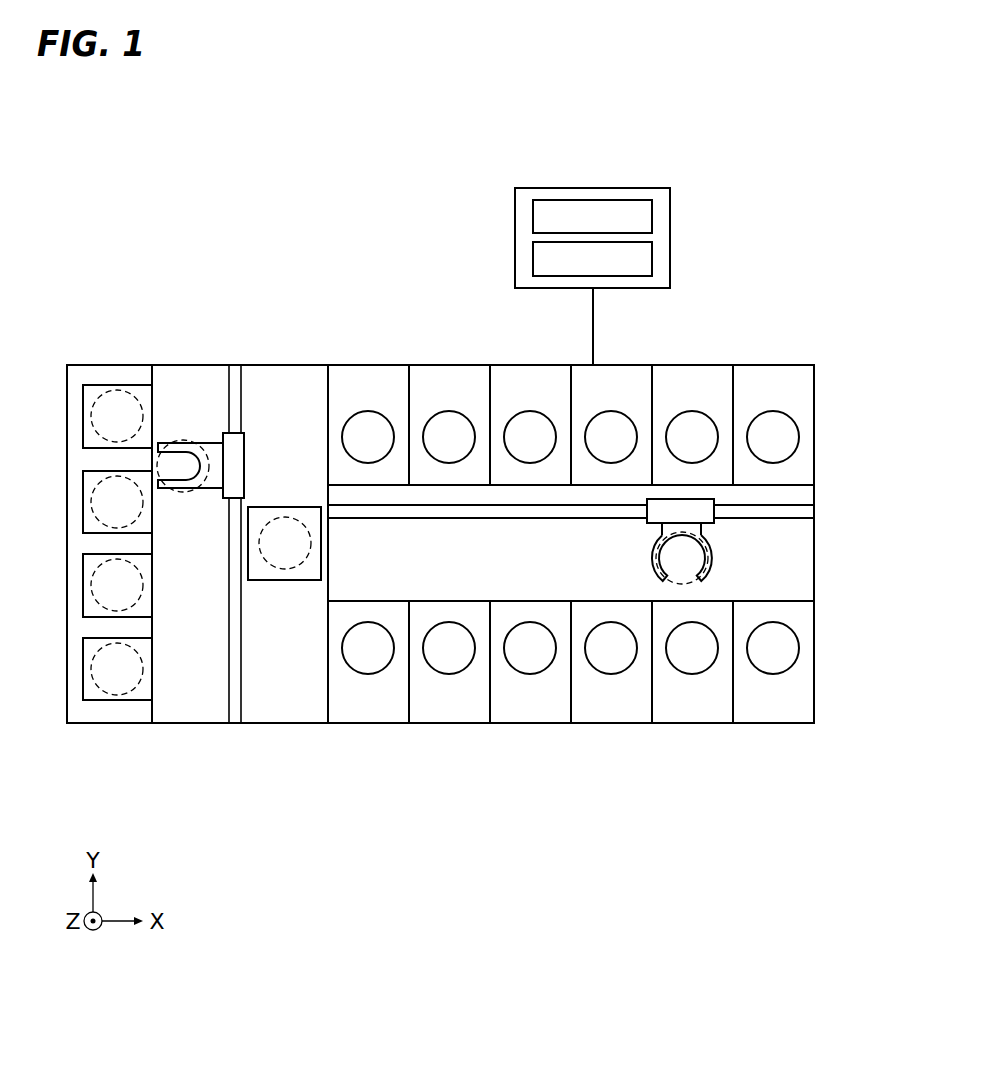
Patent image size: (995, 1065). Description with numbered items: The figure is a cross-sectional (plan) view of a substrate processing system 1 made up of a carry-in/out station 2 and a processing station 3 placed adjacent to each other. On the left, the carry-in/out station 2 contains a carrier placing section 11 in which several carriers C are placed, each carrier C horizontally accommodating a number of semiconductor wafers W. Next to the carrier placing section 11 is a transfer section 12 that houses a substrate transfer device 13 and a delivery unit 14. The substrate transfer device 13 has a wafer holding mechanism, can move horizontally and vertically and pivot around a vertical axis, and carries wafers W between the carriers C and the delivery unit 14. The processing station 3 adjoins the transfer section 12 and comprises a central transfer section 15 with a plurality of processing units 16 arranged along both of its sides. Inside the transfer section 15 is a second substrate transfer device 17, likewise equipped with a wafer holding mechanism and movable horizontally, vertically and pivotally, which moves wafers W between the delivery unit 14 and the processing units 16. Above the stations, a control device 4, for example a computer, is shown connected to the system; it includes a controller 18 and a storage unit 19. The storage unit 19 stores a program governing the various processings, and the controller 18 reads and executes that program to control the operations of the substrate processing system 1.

The substrate processing system 1 is at (122, 318).
The carry-in/out station 2 is at (67, 787).
The processing station 3 is at (813, 783).
The control device 4 is at (626, 187).
The carrier placing section 11 is at (111, 733).
The transfer section 12 is at (281, 733).
The substrate transfer device 13 is at (195, 441).
The delivery unit 14 is at (288, 506).
The transfer section 15 is at (829, 536).
The processing unit 16 is at (774, 363).
The substrate transfer device 17 is at (651, 559).
The controller 18 is at (652, 216).
The storage unit 19 is at (652, 258).
The wafer W is at (91, 662).
The carrier C is at (83, 691).